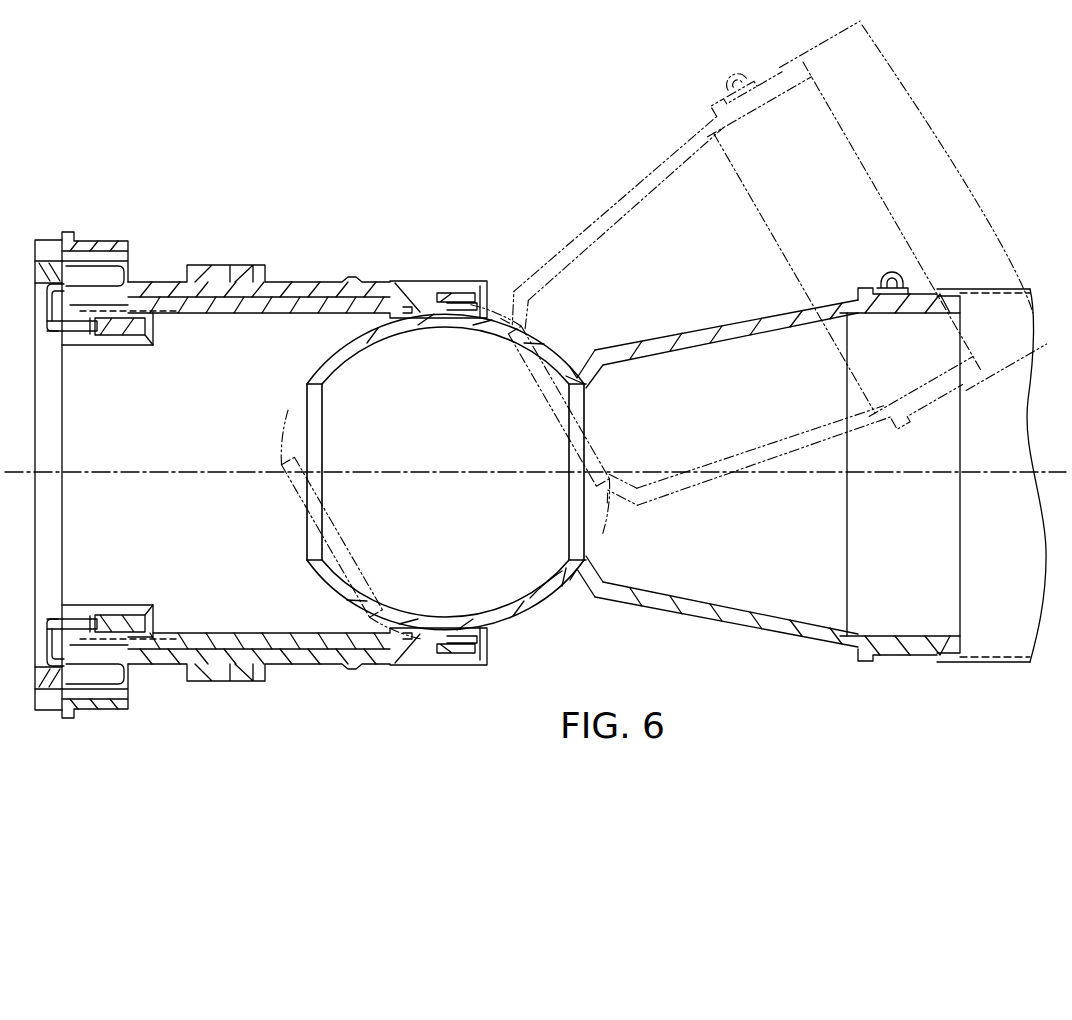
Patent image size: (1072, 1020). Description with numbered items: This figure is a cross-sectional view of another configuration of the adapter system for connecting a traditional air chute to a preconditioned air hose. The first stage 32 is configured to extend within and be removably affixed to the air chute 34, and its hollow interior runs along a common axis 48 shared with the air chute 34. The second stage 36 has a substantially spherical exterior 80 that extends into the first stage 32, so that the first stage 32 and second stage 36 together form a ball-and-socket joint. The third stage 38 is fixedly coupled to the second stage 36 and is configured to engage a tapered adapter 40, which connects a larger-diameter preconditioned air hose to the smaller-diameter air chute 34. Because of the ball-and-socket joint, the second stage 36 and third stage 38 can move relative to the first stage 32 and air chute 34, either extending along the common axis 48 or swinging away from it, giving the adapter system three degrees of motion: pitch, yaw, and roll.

The common axis 48 is at (149, 483).
The air chute 34 is at (183, 700).
The first stage 32 is at (408, 679).
The second stage 36 is at (524, 626).
The substantially spherical exterior 80 is at (521, 611).
The third stage 38 is at (770, 645).
The tapered adapter 40 is at (983, 664).